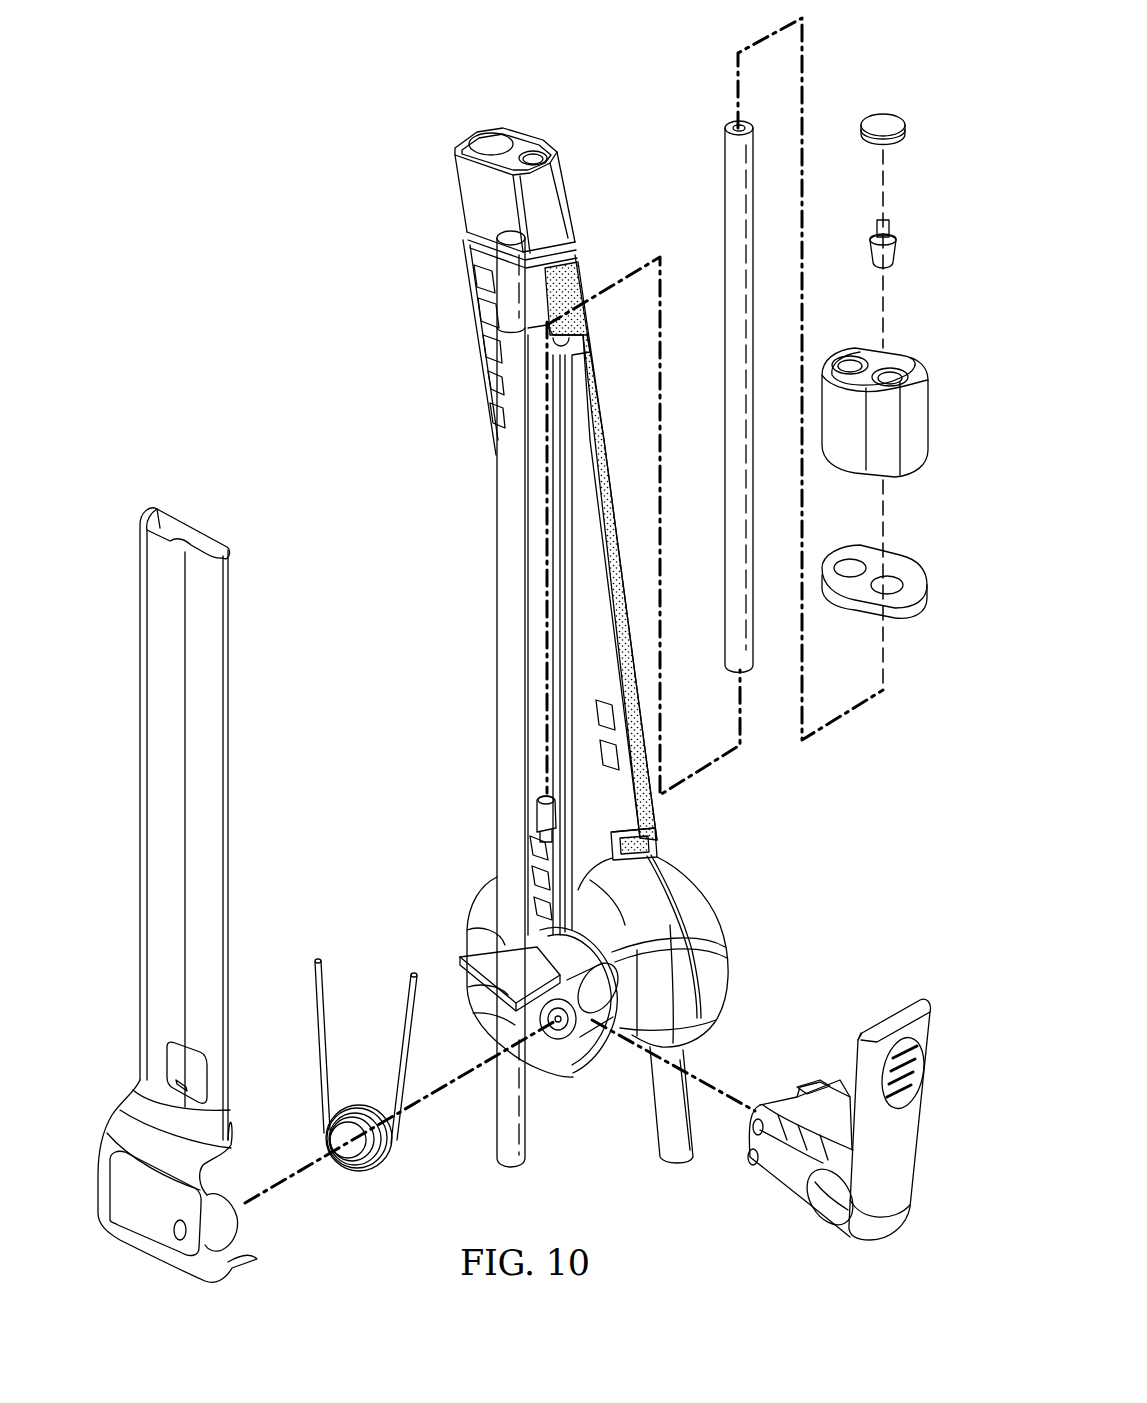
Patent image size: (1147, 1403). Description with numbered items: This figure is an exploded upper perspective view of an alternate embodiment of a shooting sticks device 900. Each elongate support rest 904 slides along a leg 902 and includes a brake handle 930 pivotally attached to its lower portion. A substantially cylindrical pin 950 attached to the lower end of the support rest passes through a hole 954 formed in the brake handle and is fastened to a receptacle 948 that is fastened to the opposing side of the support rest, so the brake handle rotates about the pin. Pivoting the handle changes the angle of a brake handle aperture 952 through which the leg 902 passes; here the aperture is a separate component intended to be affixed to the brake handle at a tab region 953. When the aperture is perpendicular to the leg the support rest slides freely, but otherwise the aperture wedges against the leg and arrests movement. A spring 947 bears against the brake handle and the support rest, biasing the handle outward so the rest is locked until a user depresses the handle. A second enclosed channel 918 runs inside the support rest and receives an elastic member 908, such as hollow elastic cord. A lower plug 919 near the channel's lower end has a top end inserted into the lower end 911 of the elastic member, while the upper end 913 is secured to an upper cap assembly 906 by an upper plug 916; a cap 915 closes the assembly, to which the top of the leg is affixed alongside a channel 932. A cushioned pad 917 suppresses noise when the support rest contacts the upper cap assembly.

The handle assembly 900 is at (262, 206).
The leg 902 is at (497, 376).
The elongate support rest 904 is at (158, 738).
The upper cap assembly 906 is at (462, 170).
The elastic member 908 is at (726, 216).
The lower end of the elastic member 911 is at (722, 686).
The upper end of the elastic member 913 is at (720, 110).
The cap 915 is at (893, 122).
The upper plug 916 is at (902, 240).
The cushioned pad 917 is at (918, 615).
The second enclosed channel 918 is at (547, 560).
The lower plug 919 is at (534, 816).
The brake handle 930 is at (910, 1150).
The channel 932 is at (642, 837).
The spring 947 is at (317, 1045).
The receptacle 948 is at (238, 1222).
The substantially cylindrical pin 950 is at (560, 1030).
The brake handle aperture 952 is at (462, 960).
The tab 953 is at (795, 1098).
The hole 954 is at (822, 1205).